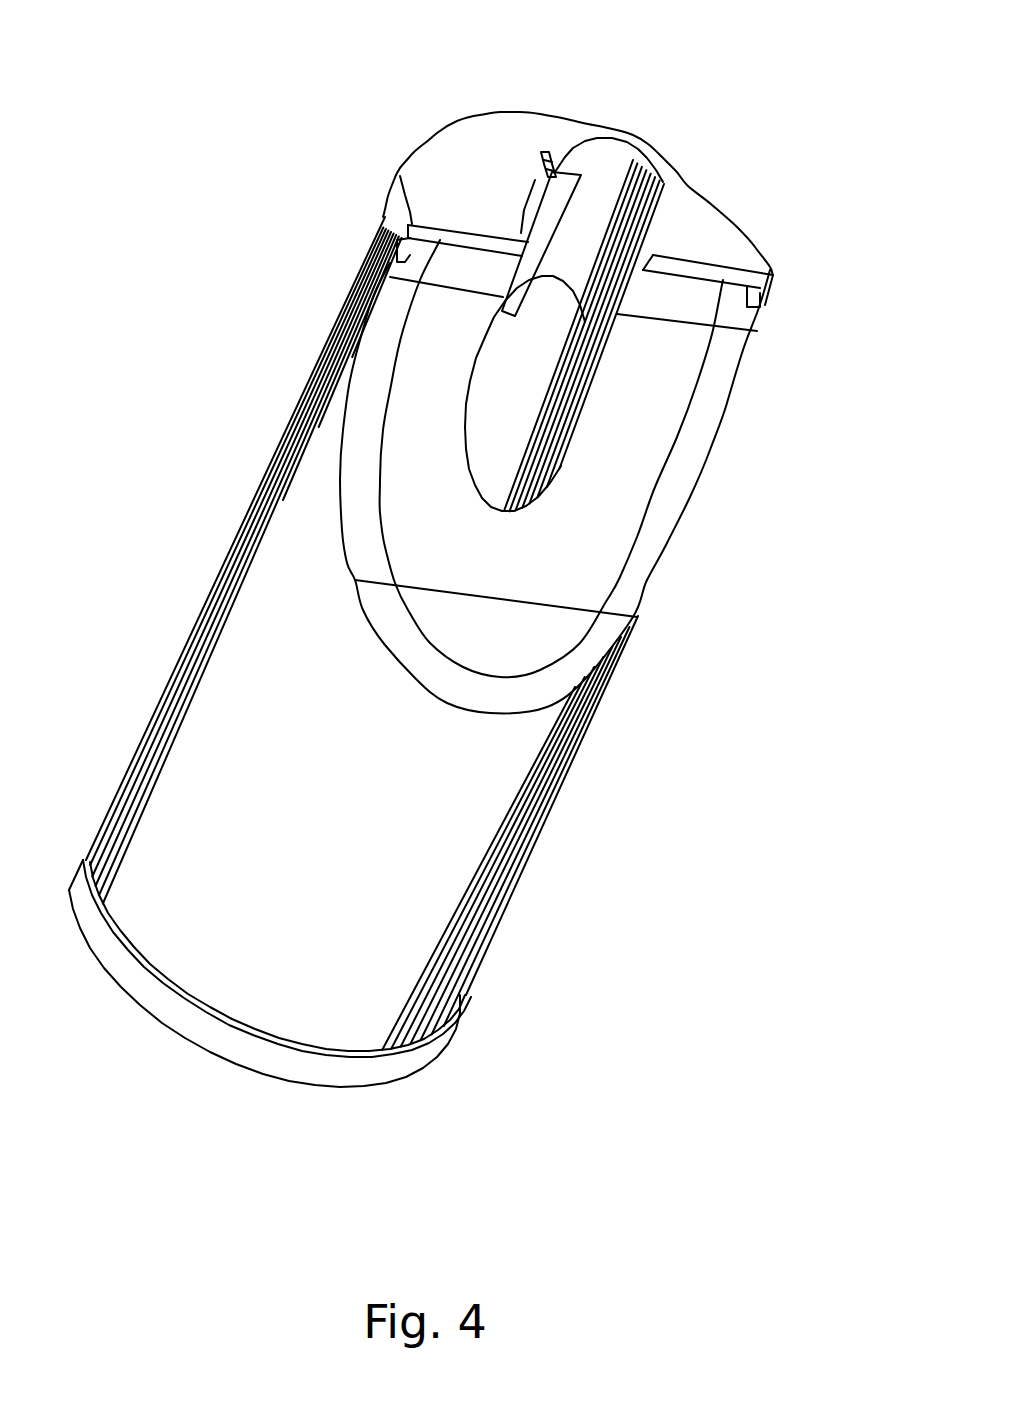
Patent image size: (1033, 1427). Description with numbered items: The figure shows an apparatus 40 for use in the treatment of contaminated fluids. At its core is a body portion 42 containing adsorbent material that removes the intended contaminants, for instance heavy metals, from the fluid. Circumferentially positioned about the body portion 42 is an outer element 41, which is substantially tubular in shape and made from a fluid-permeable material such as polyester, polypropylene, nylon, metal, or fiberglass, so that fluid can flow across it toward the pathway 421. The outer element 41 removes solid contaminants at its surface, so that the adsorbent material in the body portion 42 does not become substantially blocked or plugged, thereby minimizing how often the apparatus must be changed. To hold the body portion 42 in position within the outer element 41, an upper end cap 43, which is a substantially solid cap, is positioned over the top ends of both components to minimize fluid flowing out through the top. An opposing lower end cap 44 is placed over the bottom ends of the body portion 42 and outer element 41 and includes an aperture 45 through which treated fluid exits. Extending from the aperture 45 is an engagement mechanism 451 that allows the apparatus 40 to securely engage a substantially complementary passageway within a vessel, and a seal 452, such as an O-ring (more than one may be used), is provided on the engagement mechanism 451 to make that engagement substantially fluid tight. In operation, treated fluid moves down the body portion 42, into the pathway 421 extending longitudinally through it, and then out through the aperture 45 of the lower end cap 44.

The apparatus 40 is at (190, 148).
The outer element 41 is at (670, 542).
The body portion 42 is at (617, 490).
The pathway 421 is at (498, 389).
The upper end cap 43 is at (413, 1078).
The lower end cap 44 is at (435, 153).
The aperture 45 is at (637, 303).
The engagement mechanism 451 is at (667, 150).
The seal 452 is at (547, 153).